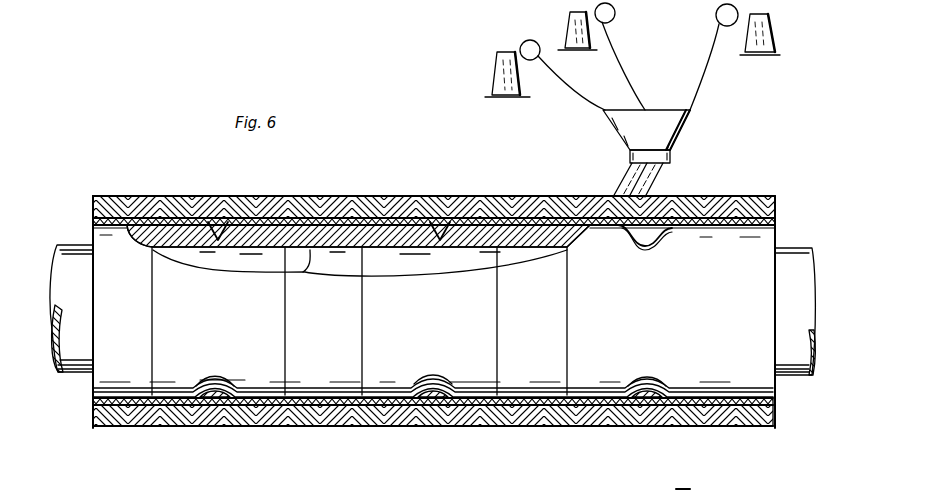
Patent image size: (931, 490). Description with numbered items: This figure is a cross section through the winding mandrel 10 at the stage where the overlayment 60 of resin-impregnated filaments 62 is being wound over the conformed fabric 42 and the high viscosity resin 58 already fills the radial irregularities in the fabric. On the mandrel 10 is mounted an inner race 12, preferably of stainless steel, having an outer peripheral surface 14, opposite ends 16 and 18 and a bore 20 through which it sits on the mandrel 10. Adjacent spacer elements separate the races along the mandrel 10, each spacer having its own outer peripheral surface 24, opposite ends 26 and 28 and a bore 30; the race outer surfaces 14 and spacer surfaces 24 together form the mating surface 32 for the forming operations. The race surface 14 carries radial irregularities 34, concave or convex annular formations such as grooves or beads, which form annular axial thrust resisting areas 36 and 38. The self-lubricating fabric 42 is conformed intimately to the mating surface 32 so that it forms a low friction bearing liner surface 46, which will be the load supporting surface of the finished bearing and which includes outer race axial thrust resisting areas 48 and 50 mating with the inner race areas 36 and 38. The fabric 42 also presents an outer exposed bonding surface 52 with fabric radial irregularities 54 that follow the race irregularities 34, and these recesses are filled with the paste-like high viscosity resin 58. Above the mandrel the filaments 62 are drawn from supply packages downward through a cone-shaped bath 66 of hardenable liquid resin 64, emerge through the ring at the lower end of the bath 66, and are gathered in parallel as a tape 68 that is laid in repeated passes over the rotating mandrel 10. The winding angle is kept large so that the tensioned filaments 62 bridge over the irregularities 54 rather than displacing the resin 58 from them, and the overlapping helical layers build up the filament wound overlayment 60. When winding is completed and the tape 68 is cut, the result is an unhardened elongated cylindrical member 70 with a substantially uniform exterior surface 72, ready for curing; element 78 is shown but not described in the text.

The mandrel 10 is at (70, 252).
The inner race 12 is at (490, 398).
The outer peripheral surface 14 is at (400, 218).
The end 16 is at (340, 408).
The end 18 is at (503, 382).
The bore 20 is at (387, 248).
The outer peripheral surface 24 is at (345, 223).
The end 26 is at (245, 424).
The end 28 is at (367, 413).
The bore 30 is at (288, 275).
The mating surface 32 is at (490, 225).
The radial irregularities 34 is at (440, 232).
The axial thrust resisting area 36 is at (427, 415).
The axial thrust resisting area 38 is at (429, 408).
The fabric 42 is at (777, 222).
The bearing liner surface 46 is at (623, 233).
The outer race axial thrust resisting area 48 is at (418, 382).
The outer race axial thrust resisting area 50 is at (447, 393).
The bonding surface 52 is at (563, 222).
The fabric radial irregularities 54 is at (437, 228).
The high viscosity resin 58 is at (650, 243).
The overlayment 60 is at (772, 198).
The filaments 62 is at (617, 66).
The liquid resin 64 is at (670, 128).
The bath 66 is at (690, 110).
The tape 68 is at (655, 178).
The elongated cylindrical member 70 is at (132, 190).
The exterior surface 72 is at (177, 196).
The element 78 is at (705, 473).